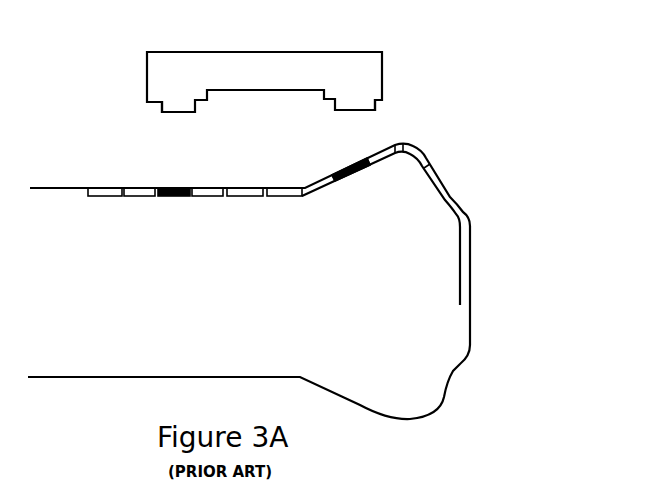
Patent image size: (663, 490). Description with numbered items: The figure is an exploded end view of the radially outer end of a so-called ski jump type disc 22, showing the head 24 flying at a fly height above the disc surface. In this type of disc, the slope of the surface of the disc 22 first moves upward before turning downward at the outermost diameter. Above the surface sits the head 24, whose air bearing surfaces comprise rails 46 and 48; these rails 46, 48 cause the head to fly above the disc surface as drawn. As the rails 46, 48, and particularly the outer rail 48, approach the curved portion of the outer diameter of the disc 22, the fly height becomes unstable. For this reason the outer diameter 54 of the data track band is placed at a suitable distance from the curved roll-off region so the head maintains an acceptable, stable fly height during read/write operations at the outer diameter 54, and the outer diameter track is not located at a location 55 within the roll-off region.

The disc 22 is at (304, 281).
The head 24 is at (142, 61).
The rail 46 is at (154, 106).
The outer rail 48 is at (381, 104).
The outer diameter of the data track band 54 is at (168, 197).
The location within the roll-off region 55 is at (349, 176).